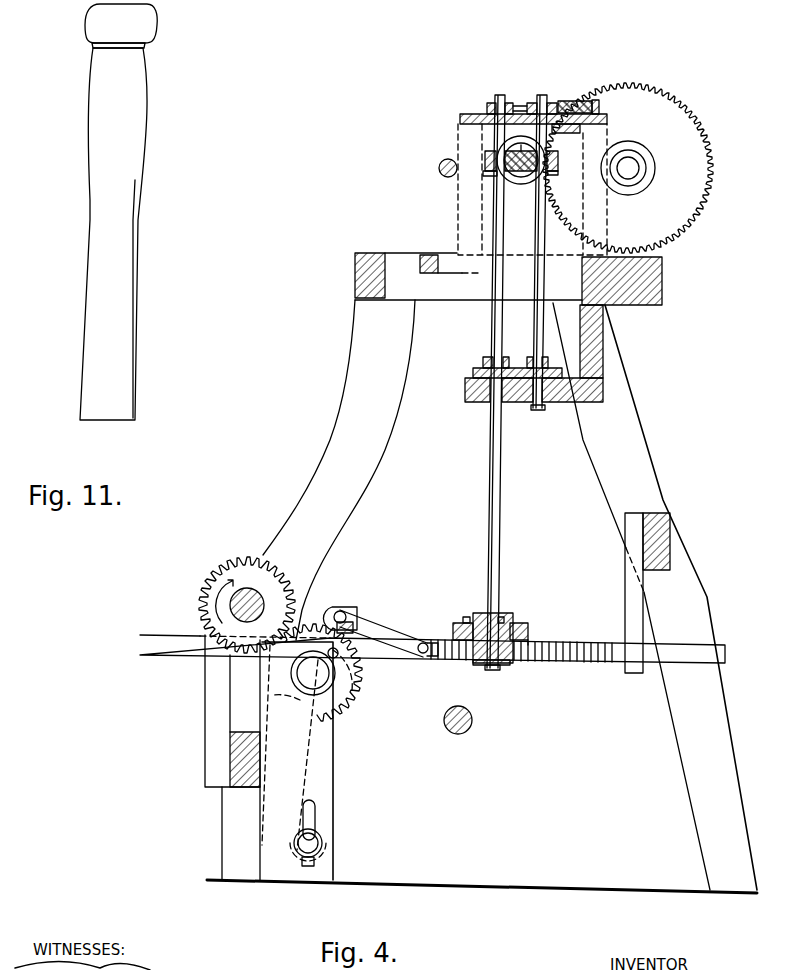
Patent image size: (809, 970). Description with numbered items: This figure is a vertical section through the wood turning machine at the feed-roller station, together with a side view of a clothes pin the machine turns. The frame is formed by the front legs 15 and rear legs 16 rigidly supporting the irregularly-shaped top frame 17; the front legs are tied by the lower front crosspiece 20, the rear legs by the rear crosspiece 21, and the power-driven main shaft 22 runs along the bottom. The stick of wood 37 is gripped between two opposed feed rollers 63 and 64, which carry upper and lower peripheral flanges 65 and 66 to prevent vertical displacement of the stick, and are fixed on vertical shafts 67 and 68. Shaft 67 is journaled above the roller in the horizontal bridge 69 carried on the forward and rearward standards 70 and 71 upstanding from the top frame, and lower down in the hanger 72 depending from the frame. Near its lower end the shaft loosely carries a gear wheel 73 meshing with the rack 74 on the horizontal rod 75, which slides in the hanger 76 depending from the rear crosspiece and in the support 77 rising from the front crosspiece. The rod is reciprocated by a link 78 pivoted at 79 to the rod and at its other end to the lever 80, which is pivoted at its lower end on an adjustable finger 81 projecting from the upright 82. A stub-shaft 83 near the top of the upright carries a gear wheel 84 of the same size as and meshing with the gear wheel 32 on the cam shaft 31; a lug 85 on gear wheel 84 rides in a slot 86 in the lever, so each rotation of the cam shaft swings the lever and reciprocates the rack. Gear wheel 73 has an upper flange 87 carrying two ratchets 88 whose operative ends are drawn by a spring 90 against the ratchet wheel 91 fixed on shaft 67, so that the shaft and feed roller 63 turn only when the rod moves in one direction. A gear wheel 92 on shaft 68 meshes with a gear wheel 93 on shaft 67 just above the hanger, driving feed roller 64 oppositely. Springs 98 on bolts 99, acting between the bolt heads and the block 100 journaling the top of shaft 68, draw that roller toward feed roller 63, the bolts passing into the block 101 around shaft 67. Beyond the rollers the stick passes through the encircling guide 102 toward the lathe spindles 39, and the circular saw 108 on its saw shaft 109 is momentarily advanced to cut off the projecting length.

The front legs 15 is at (316, 590).
The rear legs 16 is at (655, 596).
The top frame 17 is at (355, 268).
The lower front crosspiece 20 is at (230, 760).
The rear crosspiece 21 is at (672, 540).
The main shaft 22 is at (472, 722).
The cam shaft 31 is at (258, 598).
The gear wheel 32 is at (233, 560).
The stick of wood 37 is at (522, 145).
The lathe spindles 39 is at (438, 168).
The feed roller 63 is at (486, 160).
The feed roller 64 is at (558, 160).
The upper peripheral flange 65 is at (486, 155).
The lower peripheral flange 66 is at (558, 173).
The vertical shaft 67 is at (485, 172).
The vertical shaft 68 is at (543, 283).
The horizontal bridge 69 is at (470, 114).
The forward standard 70 is at (458, 215).
The rearward standard 71 is at (595, 224).
The hanger 72 is at (558, 403).
The gear wheel 73 is at (505, 665).
The rack 74 is at (574, 645).
The rod 75 is at (163, 650).
The hanger 76 is at (645, 583).
The support 77 is at (205, 695).
The link 78 is at (380, 633).
The pivot 79 is at (424, 643).
The lever 80 is at (340, 610).
The finger 81 is at (316, 842).
The upright 82 is at (335, 805).
The stub-shaft 83 is at (305, 690).
The gear wheel 84 is at (360, 688).
The lug 85 is at (338, 655).
The slot 86 is at (348, 630).
The flange 87 is at (530, 640).
The ratchets 88 is at (458, 623).
The spring 90 is at (468, 615).
The ratchet wheel 91 is at (503, 615).
The gear wheel 92 is at (518, 368).
The gear wheel 93 is at (486, 368).
The springs 98 is at (572, 102).
The bolts 99 is at (521, 103).
The block 100 is at (552, 103).
The block 101 is at (510, 103).
The encircling guide 102 is at (522, 185).
The circular saw 108 is at (628, 168).
The saw shaft 109 is at (640, 167).